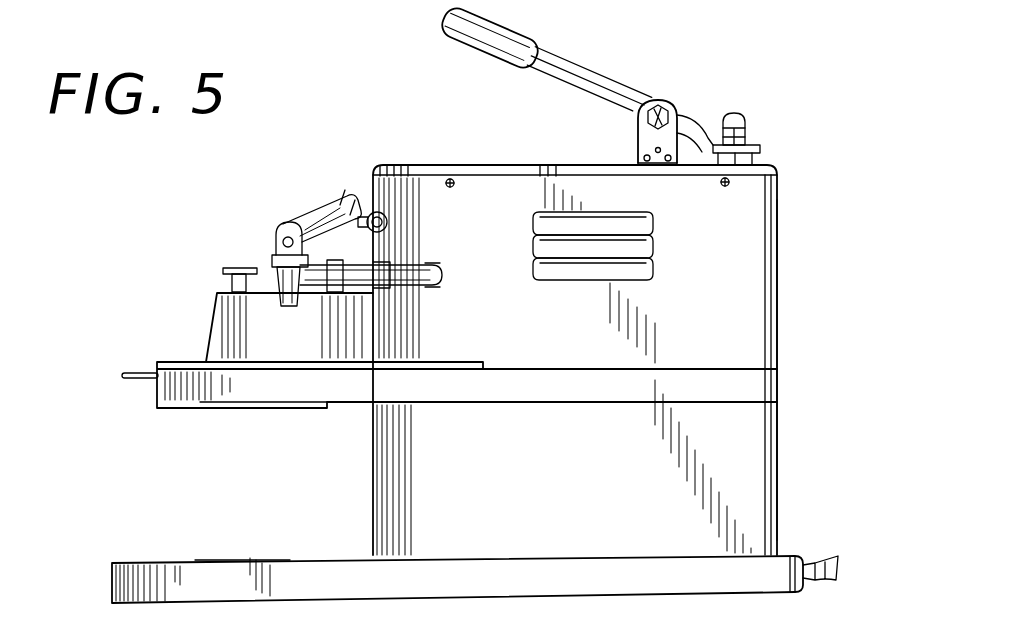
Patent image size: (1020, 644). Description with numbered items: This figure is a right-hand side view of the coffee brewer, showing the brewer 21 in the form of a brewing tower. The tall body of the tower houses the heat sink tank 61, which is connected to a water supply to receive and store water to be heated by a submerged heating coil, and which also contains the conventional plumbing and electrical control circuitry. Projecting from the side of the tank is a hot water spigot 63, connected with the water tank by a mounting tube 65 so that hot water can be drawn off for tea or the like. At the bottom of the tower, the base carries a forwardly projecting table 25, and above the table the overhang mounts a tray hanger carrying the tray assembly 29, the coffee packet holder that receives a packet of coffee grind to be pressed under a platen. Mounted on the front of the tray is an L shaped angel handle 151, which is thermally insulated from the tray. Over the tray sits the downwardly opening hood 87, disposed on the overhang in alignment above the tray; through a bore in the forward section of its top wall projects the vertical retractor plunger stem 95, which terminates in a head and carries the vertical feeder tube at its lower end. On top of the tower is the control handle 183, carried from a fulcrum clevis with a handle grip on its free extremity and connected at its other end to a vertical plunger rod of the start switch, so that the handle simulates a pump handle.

The brewer 21 is at (778, 267).
The forwardly projecting table 25 is at (112, 585).
The tray assembly 29 is at (157, 395).
The heat sink tank 61 is at (779, 321).
The hot water spigot 63 is at (283, 307).
The mounting tube 65 is at (428, 290).
The hood 87 is at (216, 312).
The retractor plunger stem 95 is at (234, 267).
The L shaped angel handle 151 is at (131, 367).
The control handle 183 is at (580, 68).